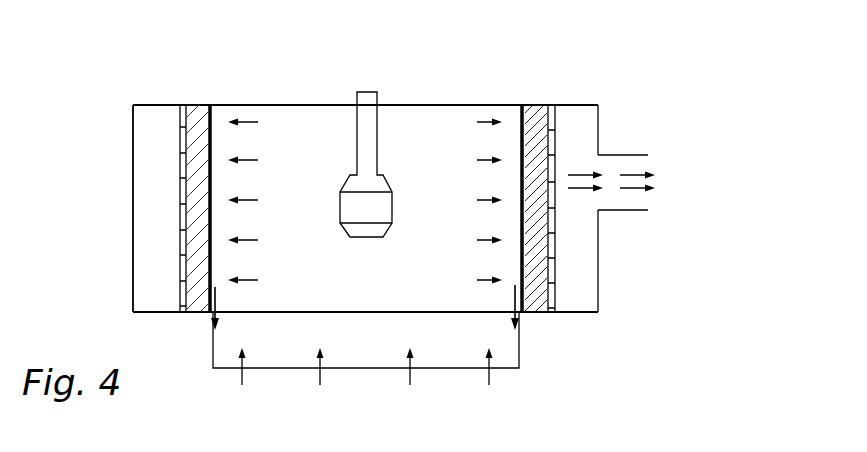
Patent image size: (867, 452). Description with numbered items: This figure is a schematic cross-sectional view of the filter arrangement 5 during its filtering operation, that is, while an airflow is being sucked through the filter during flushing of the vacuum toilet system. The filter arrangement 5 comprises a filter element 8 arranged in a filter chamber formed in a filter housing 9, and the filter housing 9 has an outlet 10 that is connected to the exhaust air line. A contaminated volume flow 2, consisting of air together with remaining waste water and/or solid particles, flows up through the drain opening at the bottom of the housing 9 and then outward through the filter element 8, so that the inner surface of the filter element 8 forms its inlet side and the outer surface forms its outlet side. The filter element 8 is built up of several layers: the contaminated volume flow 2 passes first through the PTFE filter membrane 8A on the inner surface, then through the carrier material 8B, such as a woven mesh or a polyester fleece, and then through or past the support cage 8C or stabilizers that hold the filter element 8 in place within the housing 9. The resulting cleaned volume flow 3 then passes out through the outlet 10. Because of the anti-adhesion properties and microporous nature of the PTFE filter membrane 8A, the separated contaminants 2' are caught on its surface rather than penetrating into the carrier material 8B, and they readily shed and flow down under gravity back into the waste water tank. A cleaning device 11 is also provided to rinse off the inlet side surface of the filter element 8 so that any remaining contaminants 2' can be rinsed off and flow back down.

The contaminated volume flow 2 is at (368, 351).
The contaminants 2' is at (365, 307).
The cleaned volume flow 3 is at (627, 187).
The filter arrangement 5 is at (636, 140).
The filter element 8 is at (533, 122).
The PTFE filter membrane 8A is at (214, 122).
The carrier material 8B is at (200, 120).
The support cage 8C is at (179, 113).
The filter housing 9 is at (598, 283).
The outlet 10 is at (633, 210).
The cleaning device 11 is at (373, 133).